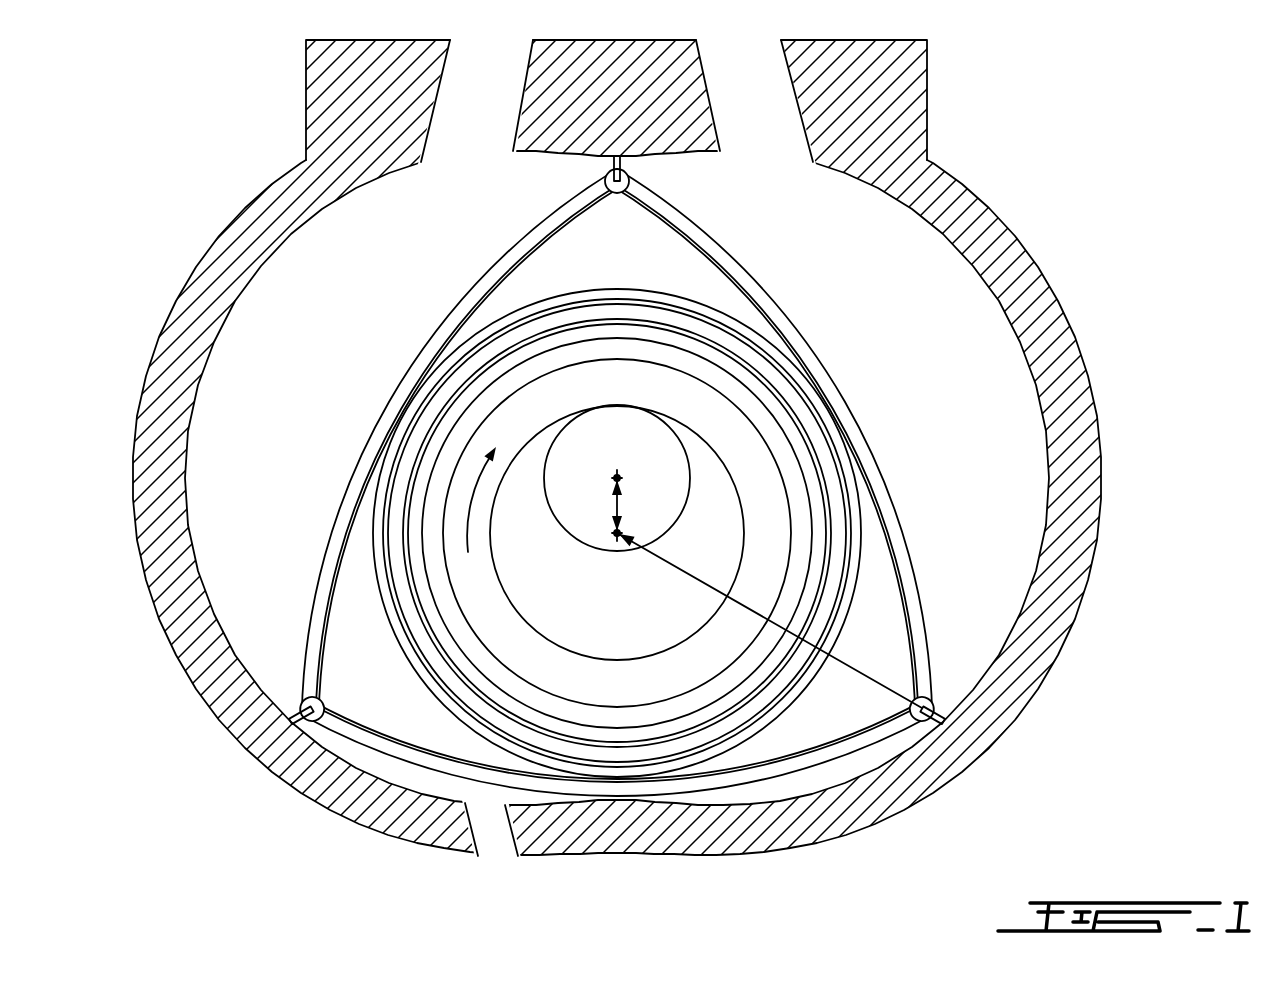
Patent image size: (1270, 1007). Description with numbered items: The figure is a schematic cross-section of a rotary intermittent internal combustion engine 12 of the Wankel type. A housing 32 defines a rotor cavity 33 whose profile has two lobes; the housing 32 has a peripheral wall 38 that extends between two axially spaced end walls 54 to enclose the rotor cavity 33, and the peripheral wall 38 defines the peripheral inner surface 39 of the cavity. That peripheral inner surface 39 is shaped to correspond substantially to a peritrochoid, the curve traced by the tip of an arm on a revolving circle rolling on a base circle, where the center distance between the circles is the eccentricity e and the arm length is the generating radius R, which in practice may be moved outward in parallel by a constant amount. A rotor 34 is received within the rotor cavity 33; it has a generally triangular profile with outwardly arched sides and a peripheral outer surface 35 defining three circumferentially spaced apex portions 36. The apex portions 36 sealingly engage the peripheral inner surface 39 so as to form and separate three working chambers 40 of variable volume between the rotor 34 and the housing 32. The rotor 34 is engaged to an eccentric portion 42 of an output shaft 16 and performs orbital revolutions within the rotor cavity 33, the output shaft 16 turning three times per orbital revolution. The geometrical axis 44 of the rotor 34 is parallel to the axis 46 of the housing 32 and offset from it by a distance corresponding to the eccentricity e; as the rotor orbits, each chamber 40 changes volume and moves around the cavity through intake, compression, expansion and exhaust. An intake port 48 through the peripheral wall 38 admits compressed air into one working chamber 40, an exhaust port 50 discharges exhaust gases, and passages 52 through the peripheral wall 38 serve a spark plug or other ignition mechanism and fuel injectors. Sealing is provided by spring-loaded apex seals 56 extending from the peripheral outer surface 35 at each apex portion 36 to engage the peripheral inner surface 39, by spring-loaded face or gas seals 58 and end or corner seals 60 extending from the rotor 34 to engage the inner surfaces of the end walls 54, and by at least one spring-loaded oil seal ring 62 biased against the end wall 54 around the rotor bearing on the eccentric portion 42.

The rotary intermittent internal combustion engine 12 is at (638, 513).
The output shaft 16 is at (647, 518).
The housing 32 is at (653, 479).
The rotor cavity 33 is at (937, 312).
The rotor 34 is at (666, 572).
The peripheral outer surface 35 is at (905, 530).
The apex portions 36 is at (937, 718).
The peripheral wall 38 is at (1048, 340).
The peripheral inner surface 39 is at (927, 228).
The working chambers 40 is at (725, 882).
The eccentric portion 42 is at (647, 618).
The geometrical axis 44 is at (615, 534).
The axis 46 is at (617, 478).
The intake port 48 is at (755, 122).
The exhaust port 50 is at (478, 120).
The passages 52 is at (490, 833).
The end walls 54 is at (998, 570).
The apex seals 56 is at (293, 720).
The face or gas seals 58 is at (327, 603).
The end or corner seals 60 is at (300, 702).
The oil seal ring 62 is at (752, 693).
The eccentricity e is at (618, 505).
The generating radius R is at (842, 664).